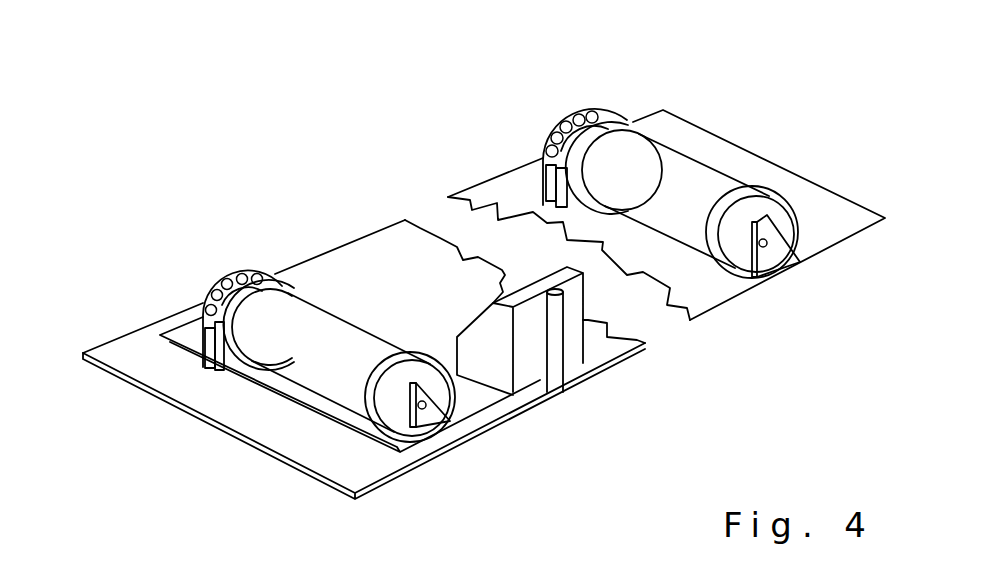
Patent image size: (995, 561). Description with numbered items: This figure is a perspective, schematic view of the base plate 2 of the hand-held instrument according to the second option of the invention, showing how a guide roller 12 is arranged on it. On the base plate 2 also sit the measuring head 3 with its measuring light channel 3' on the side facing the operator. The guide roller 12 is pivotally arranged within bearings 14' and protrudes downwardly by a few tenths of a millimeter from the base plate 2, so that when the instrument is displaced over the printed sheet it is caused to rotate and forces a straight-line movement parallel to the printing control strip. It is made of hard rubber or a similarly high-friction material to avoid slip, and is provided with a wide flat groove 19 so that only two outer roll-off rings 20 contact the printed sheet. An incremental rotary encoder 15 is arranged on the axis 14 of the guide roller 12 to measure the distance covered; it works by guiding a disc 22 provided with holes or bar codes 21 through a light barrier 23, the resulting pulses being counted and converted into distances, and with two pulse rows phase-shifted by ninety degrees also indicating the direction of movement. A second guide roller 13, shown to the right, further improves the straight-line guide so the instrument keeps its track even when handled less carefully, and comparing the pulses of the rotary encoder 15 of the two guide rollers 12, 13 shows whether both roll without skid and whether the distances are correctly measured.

The base plate 2 is at (332, 268).
The measuring head 3 is at (566, 333).
The measuring light channel 3' is at (596, 361).
The guide roller 12 is at (397, 417).
The second guide roller 13 is at (740, 252).
The axis 14 is at (638, 339).
The bearings 14' is at (627, 371).
The incremental rotary encoder 15 is at (580, 94).
The wide flat groove 19 is at (702, 154).
The outer roll-off rings 20 is at (752, 186).
The holes or bar codes 21 is at (547, 148).
The disc 22 is at (560, 124).
The light barrier 23 is at (548, 200).